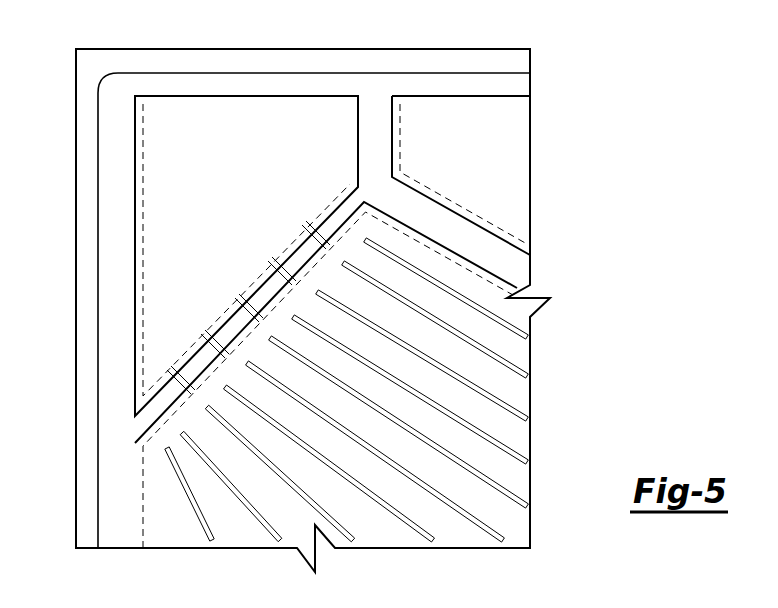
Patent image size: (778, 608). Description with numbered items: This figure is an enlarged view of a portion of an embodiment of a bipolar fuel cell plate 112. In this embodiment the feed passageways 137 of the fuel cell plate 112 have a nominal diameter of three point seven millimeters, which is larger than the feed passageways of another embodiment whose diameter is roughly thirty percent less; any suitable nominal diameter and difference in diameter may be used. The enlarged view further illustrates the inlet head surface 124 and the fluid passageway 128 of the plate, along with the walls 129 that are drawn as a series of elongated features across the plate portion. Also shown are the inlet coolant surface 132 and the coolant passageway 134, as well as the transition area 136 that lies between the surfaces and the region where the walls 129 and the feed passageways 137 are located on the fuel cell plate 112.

The fuel cell plate 112 is at (581, 50).
The inlet head surface 124 is at (139, 148).
The fluid passageway 128 is at (228, 106).
The walls 129 is at (528, 337).
The inlet coolant surface 132 is at (427, 97).
The coolant passageway 134 is at (513, 105).
The transition area 136 is at (145, 505).
The feed passageways 137 is at (181, 378).